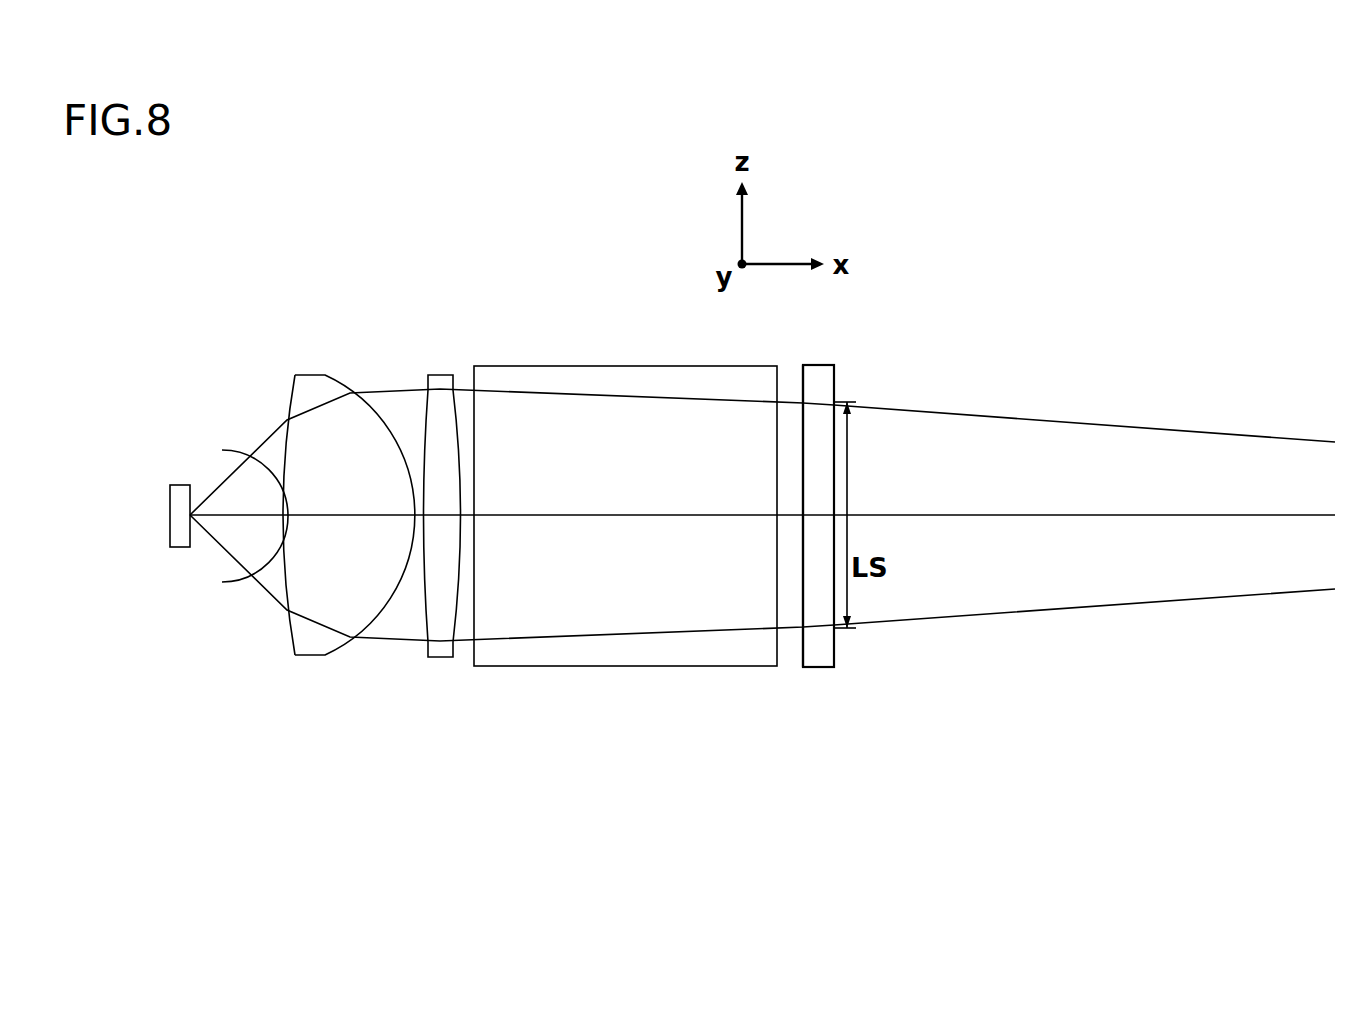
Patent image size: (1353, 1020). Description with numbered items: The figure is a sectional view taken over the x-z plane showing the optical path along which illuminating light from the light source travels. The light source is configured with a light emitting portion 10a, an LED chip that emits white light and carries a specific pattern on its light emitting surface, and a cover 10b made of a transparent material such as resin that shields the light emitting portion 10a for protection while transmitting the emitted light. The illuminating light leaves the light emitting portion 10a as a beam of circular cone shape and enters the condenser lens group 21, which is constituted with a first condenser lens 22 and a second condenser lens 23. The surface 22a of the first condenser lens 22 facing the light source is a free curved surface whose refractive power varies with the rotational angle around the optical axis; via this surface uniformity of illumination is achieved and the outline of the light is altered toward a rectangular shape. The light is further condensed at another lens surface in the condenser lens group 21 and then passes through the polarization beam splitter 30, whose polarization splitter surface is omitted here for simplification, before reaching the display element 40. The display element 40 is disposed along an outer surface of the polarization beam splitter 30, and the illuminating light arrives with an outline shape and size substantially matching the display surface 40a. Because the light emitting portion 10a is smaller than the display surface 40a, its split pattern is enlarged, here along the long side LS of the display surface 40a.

The light emitting portion 10a is at (182, 485).
The cover 10b is at (230, 579).
The condenser lens group 21 is at (354, 599).
The first condenser lens 22 is at (318, 551).
The free curved surface 22a is at (287, 575).
The second condenser lens 23 is at (442, 650).
The polarization beam splitter 30 is at (583, 648).
The display element 40 is at (770, 562).
The display surface 40a is at (802, 652).